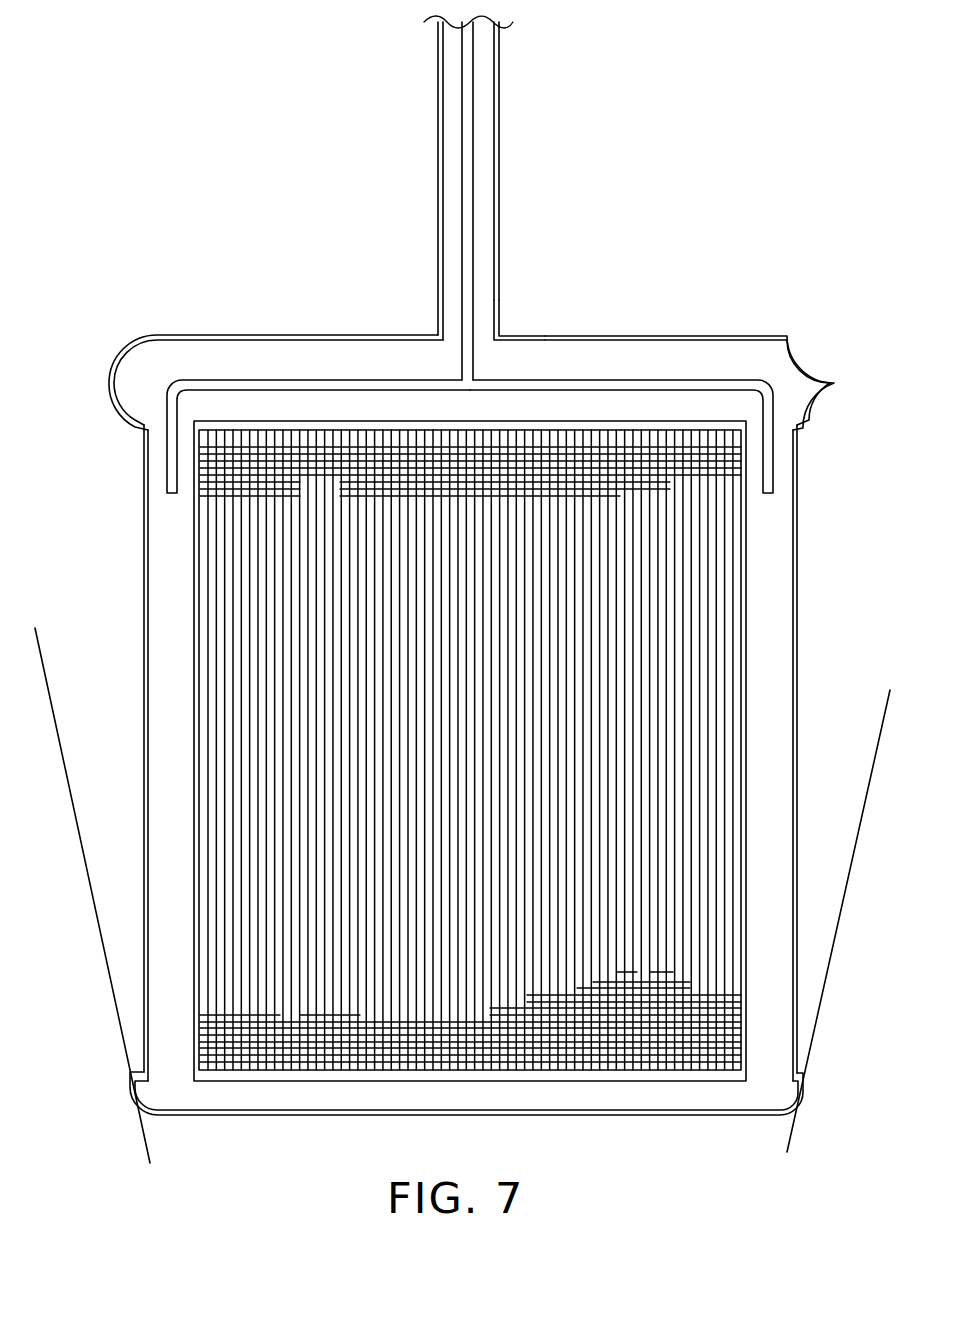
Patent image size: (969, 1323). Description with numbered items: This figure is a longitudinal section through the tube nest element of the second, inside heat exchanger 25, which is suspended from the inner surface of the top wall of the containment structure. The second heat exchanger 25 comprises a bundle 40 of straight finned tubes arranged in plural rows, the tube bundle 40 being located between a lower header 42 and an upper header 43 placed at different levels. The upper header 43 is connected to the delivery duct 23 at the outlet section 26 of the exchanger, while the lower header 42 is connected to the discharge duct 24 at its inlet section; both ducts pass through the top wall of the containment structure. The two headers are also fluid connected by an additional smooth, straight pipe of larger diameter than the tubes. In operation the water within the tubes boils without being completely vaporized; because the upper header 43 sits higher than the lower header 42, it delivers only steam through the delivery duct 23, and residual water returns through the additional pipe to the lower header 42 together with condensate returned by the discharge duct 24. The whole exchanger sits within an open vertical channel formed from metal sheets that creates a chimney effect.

The delivery duct 23 is at (483, 187).
The discharge duct 24 is at (470, 117).
The second heat exchanger 25 is at (247, 284).
The outlet section 26 is at (482, 338).
The tube bundle 40 is at (477, 685).
The lower header 42 is at (357, 1095).
The upper header 43 is at (675, 356).